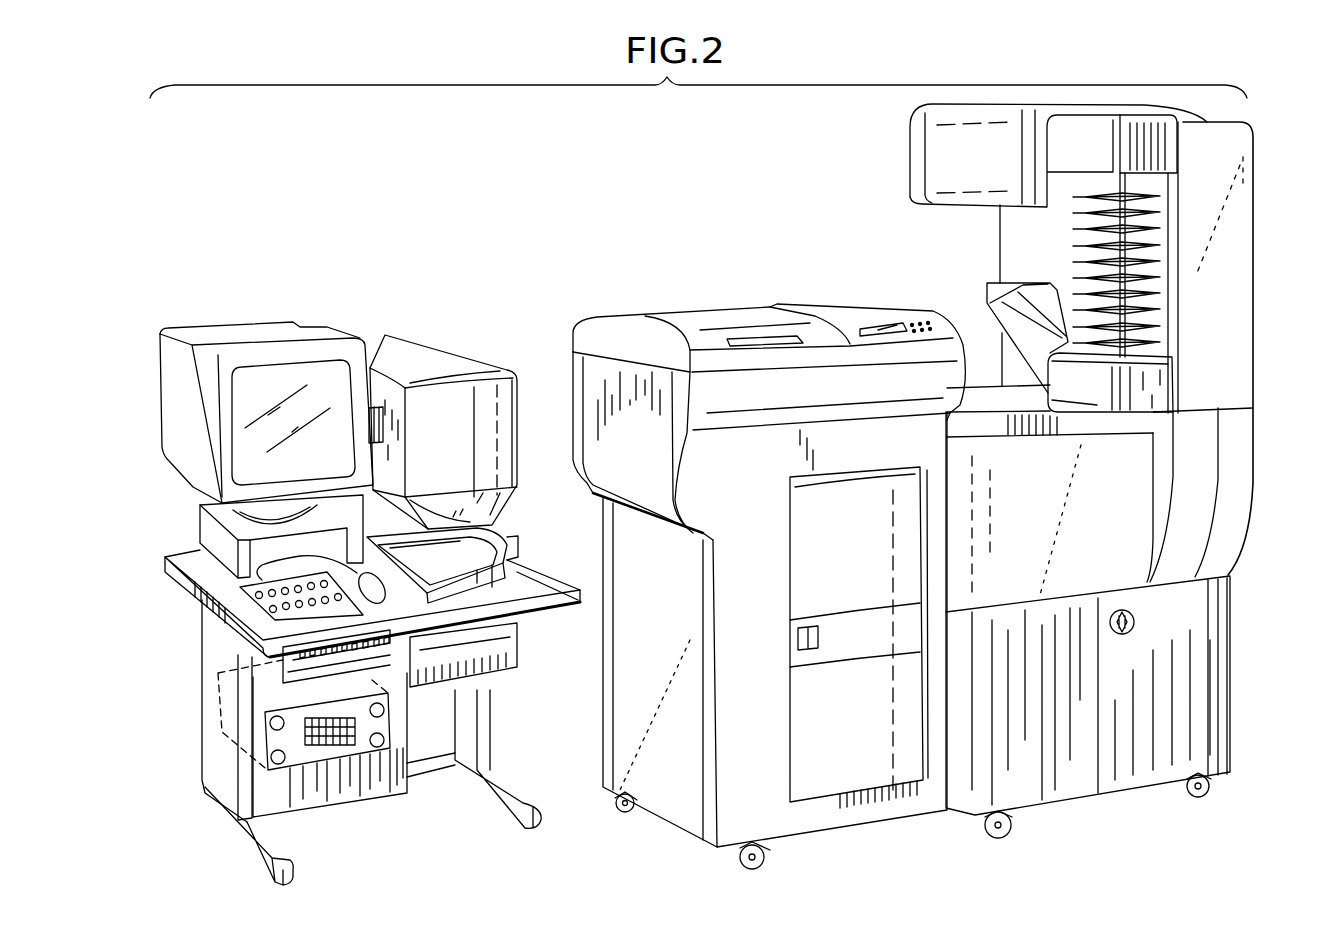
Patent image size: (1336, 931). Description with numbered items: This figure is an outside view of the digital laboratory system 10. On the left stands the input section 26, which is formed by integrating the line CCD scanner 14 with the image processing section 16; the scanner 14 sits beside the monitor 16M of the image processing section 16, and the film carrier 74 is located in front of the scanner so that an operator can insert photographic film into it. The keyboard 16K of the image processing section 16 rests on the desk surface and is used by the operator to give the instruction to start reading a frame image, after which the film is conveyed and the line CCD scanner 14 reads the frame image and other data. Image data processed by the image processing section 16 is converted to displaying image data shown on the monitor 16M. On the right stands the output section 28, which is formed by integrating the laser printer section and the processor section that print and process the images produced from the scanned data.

The digital laboratory system 10 is at (468, 202).
The input section 26 is at (264, 300).
The monitor 16M is at (200, 378).
The line CCD scanner 14 is at (487, 352).
The film carrier 74 is at (485, 545).
The keyboard 16K is at (262, 608).
The image processing section 16 is at (218, 704).
The output section 28 is at (718, 261).